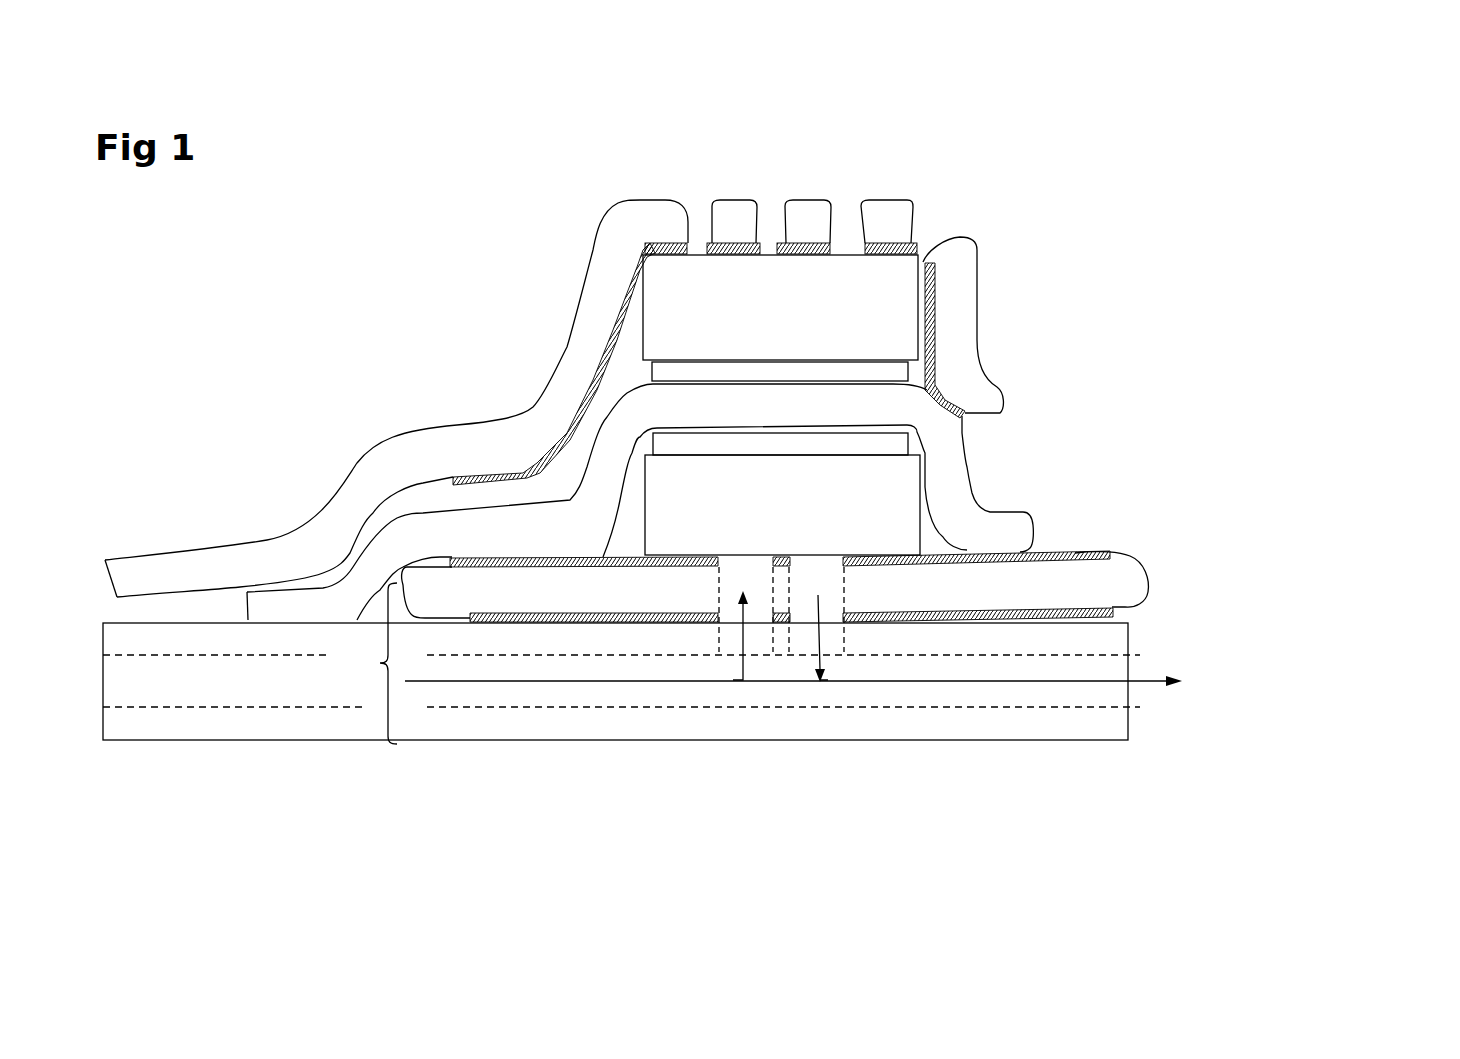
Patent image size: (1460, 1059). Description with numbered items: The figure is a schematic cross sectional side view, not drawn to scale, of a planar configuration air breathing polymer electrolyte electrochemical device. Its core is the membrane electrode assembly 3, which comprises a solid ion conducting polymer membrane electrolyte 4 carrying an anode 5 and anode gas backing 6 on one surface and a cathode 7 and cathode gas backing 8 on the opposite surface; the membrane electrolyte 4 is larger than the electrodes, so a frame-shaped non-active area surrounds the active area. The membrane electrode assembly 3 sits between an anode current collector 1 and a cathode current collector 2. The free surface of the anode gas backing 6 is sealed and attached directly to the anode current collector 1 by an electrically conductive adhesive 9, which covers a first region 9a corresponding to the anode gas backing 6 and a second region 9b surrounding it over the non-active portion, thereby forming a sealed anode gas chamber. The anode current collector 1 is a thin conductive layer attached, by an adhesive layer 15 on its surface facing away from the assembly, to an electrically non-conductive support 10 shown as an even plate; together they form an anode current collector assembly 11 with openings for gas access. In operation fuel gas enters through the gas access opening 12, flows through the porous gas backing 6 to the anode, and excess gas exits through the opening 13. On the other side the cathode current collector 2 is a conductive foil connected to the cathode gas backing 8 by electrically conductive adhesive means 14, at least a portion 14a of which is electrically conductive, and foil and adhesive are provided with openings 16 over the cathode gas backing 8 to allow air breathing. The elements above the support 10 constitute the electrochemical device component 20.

The anode current collector 1 is at (1100, 570).
The cathode current collector 2 is at (638, 227).
The membrane electrode assembly 3 is at (1138, 222).
The solid ion conducting polymer membrane electrolyte 4 is at (867, 400).
The anode 5 is at (888, 442).
The anode gas backing 6 is at (903, 487).
The cathode 7 is at (857, 370).
The cathode gas backing 8 is at (837, 308).
The adhesive 9 is at (1057, 550).
The first region 9a is at (925, 765).
The second region 9b is at (647, 768).
The support 10 is at (1087, 718).
The anode current collector assembly 11 is at (365, 663).
The gas access opening 12 is at (758, 633).
The opening 13 is at (807, 630).
The electrically conductive adhesive means 14 is at (925, 257).
The portion of the adhesive means 14a is at (632, 167).
The adhesive layer 15 is at (1053, 620).
The openings 16 is at (850, 215).
The electrochemical device component 20 is at (1297, 212).